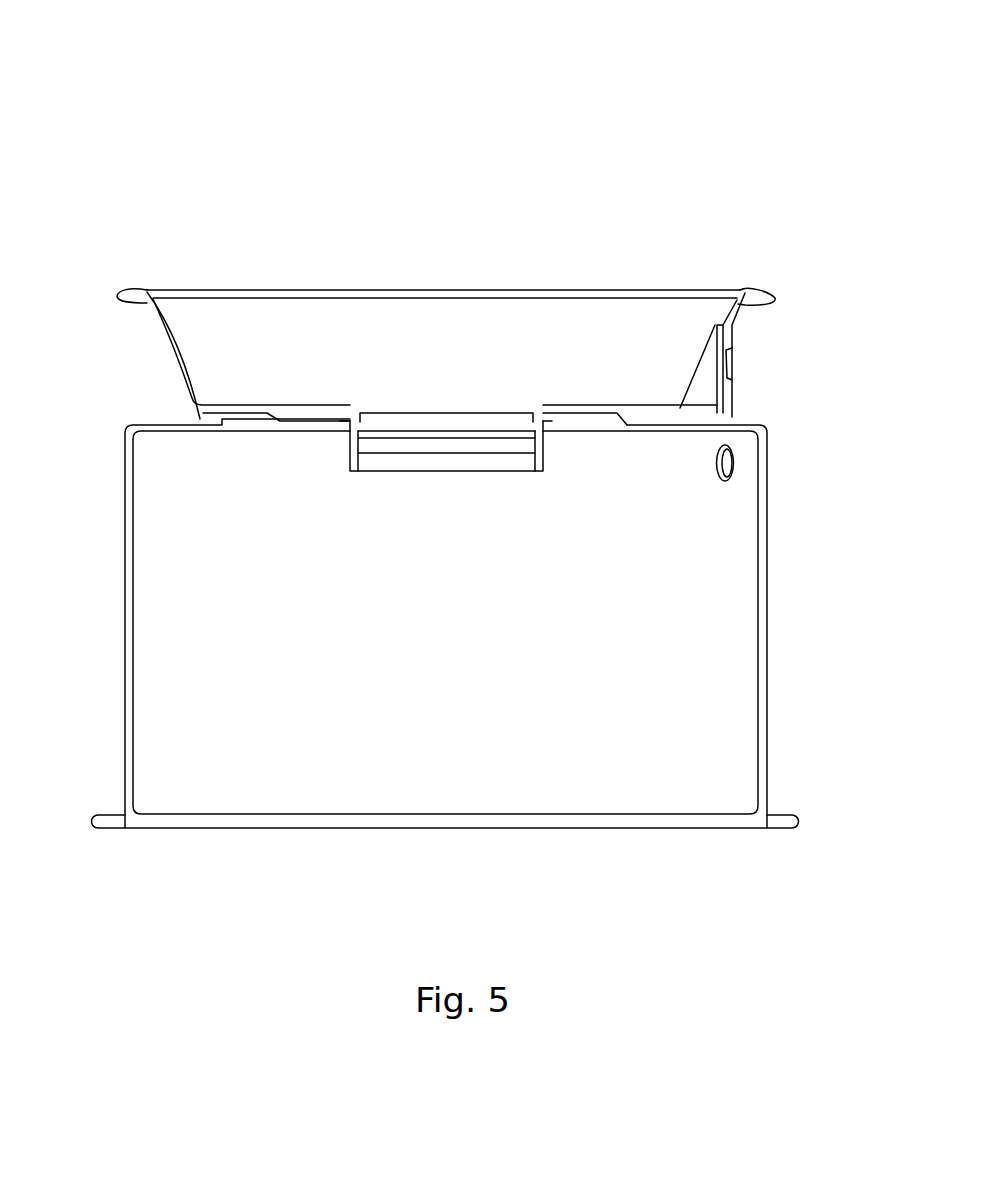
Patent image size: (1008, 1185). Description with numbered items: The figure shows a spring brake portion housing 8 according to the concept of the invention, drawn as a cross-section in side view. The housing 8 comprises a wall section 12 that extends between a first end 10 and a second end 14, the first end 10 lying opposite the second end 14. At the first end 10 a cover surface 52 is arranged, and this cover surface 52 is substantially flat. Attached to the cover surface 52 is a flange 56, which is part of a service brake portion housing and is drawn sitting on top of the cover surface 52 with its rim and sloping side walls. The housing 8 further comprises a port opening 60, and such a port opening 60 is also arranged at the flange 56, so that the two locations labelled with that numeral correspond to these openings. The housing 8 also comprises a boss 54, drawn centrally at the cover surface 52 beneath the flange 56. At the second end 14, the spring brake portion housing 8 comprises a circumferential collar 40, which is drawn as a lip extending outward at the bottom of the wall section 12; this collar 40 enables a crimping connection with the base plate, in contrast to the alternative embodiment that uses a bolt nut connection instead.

The spring brake portion housing 8 is at (172, 146).
The first end 10 is at (98, 417).
The wall section 12 is at (762, 622).
The second end 14 is at (718, 858).
The circumferential collar 40 is at (797, 825).
The cover surface 52 is at (168, 418).
The boss 54 is at (543, 460).
The flange 56 is at (183, 363).
The port opening 60 is at (731, 368).